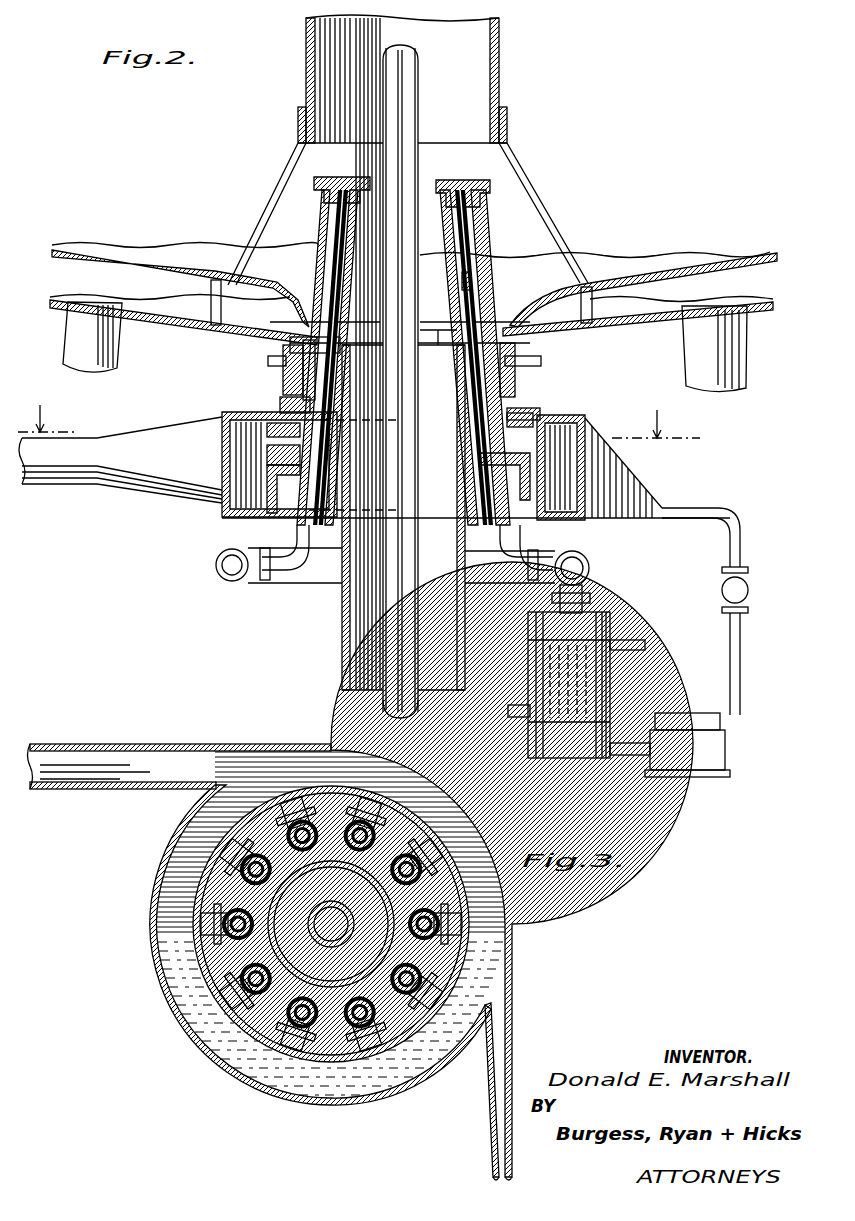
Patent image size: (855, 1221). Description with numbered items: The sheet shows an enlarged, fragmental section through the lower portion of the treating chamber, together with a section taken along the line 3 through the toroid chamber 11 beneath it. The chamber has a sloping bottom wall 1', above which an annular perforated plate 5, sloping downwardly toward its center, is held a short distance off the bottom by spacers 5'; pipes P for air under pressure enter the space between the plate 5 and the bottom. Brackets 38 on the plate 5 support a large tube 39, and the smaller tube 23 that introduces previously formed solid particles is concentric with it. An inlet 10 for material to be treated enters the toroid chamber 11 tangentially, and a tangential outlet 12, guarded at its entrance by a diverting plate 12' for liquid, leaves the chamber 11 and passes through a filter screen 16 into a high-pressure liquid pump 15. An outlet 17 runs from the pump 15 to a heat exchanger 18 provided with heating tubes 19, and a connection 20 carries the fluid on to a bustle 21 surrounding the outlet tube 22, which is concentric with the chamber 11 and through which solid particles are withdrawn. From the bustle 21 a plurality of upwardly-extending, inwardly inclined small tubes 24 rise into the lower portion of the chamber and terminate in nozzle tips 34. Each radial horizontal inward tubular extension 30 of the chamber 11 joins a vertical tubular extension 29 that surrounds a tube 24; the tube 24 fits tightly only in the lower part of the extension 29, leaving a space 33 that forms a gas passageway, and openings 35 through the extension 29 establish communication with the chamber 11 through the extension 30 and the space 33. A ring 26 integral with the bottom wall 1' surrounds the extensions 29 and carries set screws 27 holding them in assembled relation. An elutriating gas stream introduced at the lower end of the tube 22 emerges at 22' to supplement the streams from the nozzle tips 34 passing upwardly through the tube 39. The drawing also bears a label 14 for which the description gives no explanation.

In FIG. 2, the sloping bottom wall 1' is at (411, 326).
In FIG. 2, the section line 3 is at (359, 421).
In FIG. 2, the annular perforated plate 5 is at (414, 276).
In FIG. 2, the spacers 5' is at (414, 304).
In FIG. 2, the inlet 10 is at (55, 486).
In FIG. 3, the inlet 10 is at (103, 738).
In FIG. 2, the toroid chamber 11 is at (222, 440).
In FIG. 3, the toroid chamber 11 is at (152, 957).
In FIG. 2, the tangential outlet 12 is at (701, 600).
In FIG. 3, the tangential outlet 12 is at (466, 1162).
In FIG. 3, the diverting plate 12' is at (522, 1078).
In FIG. 3, the nozzles 14 is at (287, 1053).
In FIG. 2, the high-pressure liquid pump 15 is at (717, 758).
In FIG. 2, the filter screen 16 is at (750, 590).
In FIG. 2, the outlet 17 is at (640, 730).
In FIG. 2, the heat exchanger 18 is at (613, 683).
In FIG. 2, the heating tubes 19 is at (545, 683).
In FIG. 2, the connection 20 is at (594, 600).
In FIG. 2, the bustle 21 is at (216, 570).
In FIG. 2, the outlet tube 22 is at (403, 354).
In FIG. 3, the outlet tube 22 is at (331, 912).
In FIG. 2, the emergence point of elutriating gas 22' is at (438, 323).
In FIG. 2, the smaller tube 23 is at (420, 82).
In FIG. 3, the smaller tube 23 is at (310, 919).
In FIG. 2, the small tubes 24 is at (320, 260).
In FIG. 3, the small tubes 24 is at (422, 910).
In FIG. 2, the ring 26 is at (290, 380).
In FIG. 2, the set screws 27 is at (268, 360).
In FIG. 2, the vertical tubular extension 29 is at (221, 518).
In FIG. 3, the vertical tubular extension 29 is at (413, 945).
In FIG. 2, the radial horizontal inward tubular extension 30 is at (238, 412).
In FIG. 2, the spaces 33 is at (345, 279).
In FIG. 2, the nozzle tips 34 is at (340, 179).
In FIG. 2, the openings 35 is at (510, 437).
In FIG. 3, the openings 35 is at (423, 852).
In FIG. 2, the brackets 38 is at (265, 207).
In FIG. 2, the large tube 39 is at (478, 38).
In FIG. 2, the pipes for air under pressure P is at (120, 365).